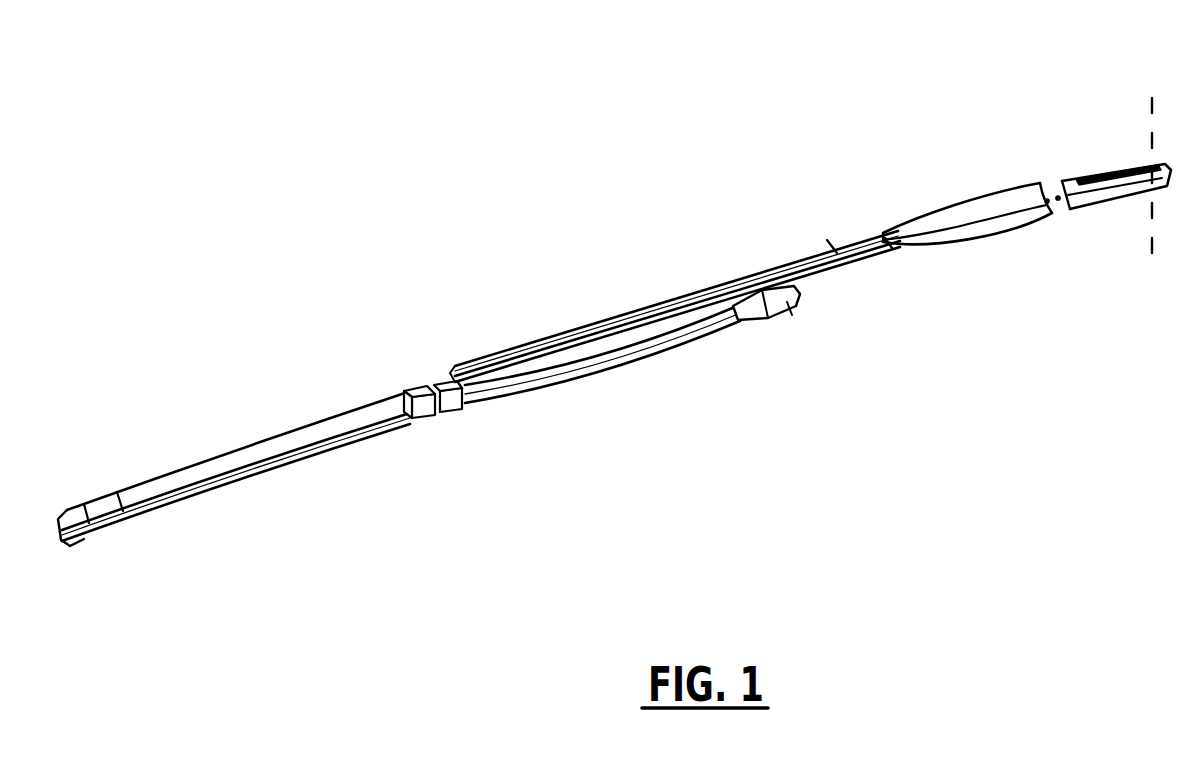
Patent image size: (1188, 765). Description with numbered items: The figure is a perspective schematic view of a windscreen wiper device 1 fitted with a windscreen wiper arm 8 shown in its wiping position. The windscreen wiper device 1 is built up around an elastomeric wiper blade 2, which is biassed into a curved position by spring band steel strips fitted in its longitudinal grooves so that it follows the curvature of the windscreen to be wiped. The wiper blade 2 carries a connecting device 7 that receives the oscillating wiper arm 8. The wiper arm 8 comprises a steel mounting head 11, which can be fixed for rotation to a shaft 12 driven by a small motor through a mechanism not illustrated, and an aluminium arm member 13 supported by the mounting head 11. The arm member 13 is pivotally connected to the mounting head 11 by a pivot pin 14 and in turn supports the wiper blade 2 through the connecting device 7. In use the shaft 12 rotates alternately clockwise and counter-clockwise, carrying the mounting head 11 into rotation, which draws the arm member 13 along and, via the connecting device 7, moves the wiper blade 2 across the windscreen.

The windscreen wiper device 1 is at (500, 205).
The wiper blade 2 is at (279, 447).
The connecting device 7 is at (428, 386).
The windscreen wiper arm 8 is at (737, 237).
The mounting head 11 is at (1108, 199).
The shaft 12 is at (1158, 98).
The arm member 13 is at (978, 205).
The pivot pin 14 is at (1055, 205).